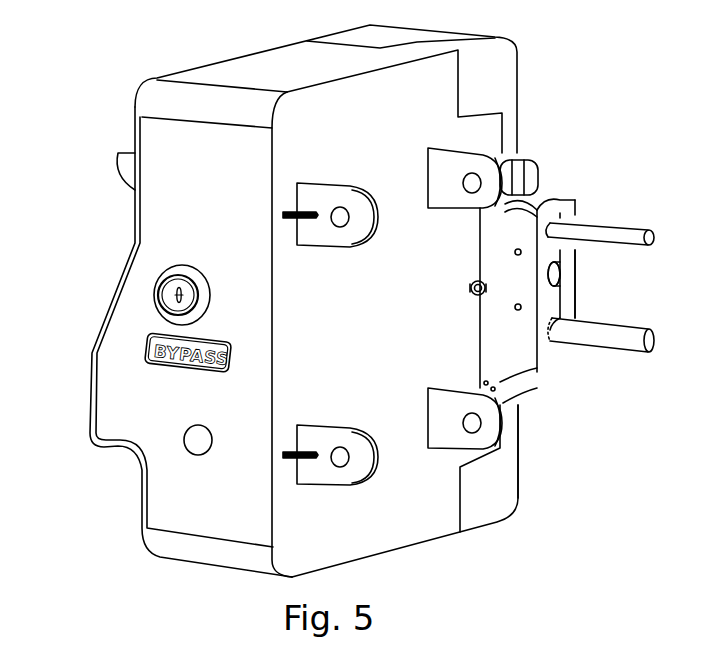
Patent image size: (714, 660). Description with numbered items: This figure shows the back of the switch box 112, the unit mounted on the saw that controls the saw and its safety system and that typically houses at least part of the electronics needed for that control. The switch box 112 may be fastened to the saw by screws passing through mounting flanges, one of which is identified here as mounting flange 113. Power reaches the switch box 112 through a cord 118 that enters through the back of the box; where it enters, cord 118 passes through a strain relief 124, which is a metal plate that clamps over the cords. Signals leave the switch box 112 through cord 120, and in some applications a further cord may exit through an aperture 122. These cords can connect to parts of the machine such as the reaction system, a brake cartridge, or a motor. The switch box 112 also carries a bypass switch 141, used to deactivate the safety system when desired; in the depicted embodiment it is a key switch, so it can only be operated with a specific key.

The switch box 112 is at (490, 573).
The mounting flange 113 is at (318, 203).
The cord 118 is at (596, 343).
The cord 120 is at (590, 225).
The aperture 122 is at (562, 277).
The strain relief 124 is at (570, 303).
The bypass switch 141 is at (166, 293).